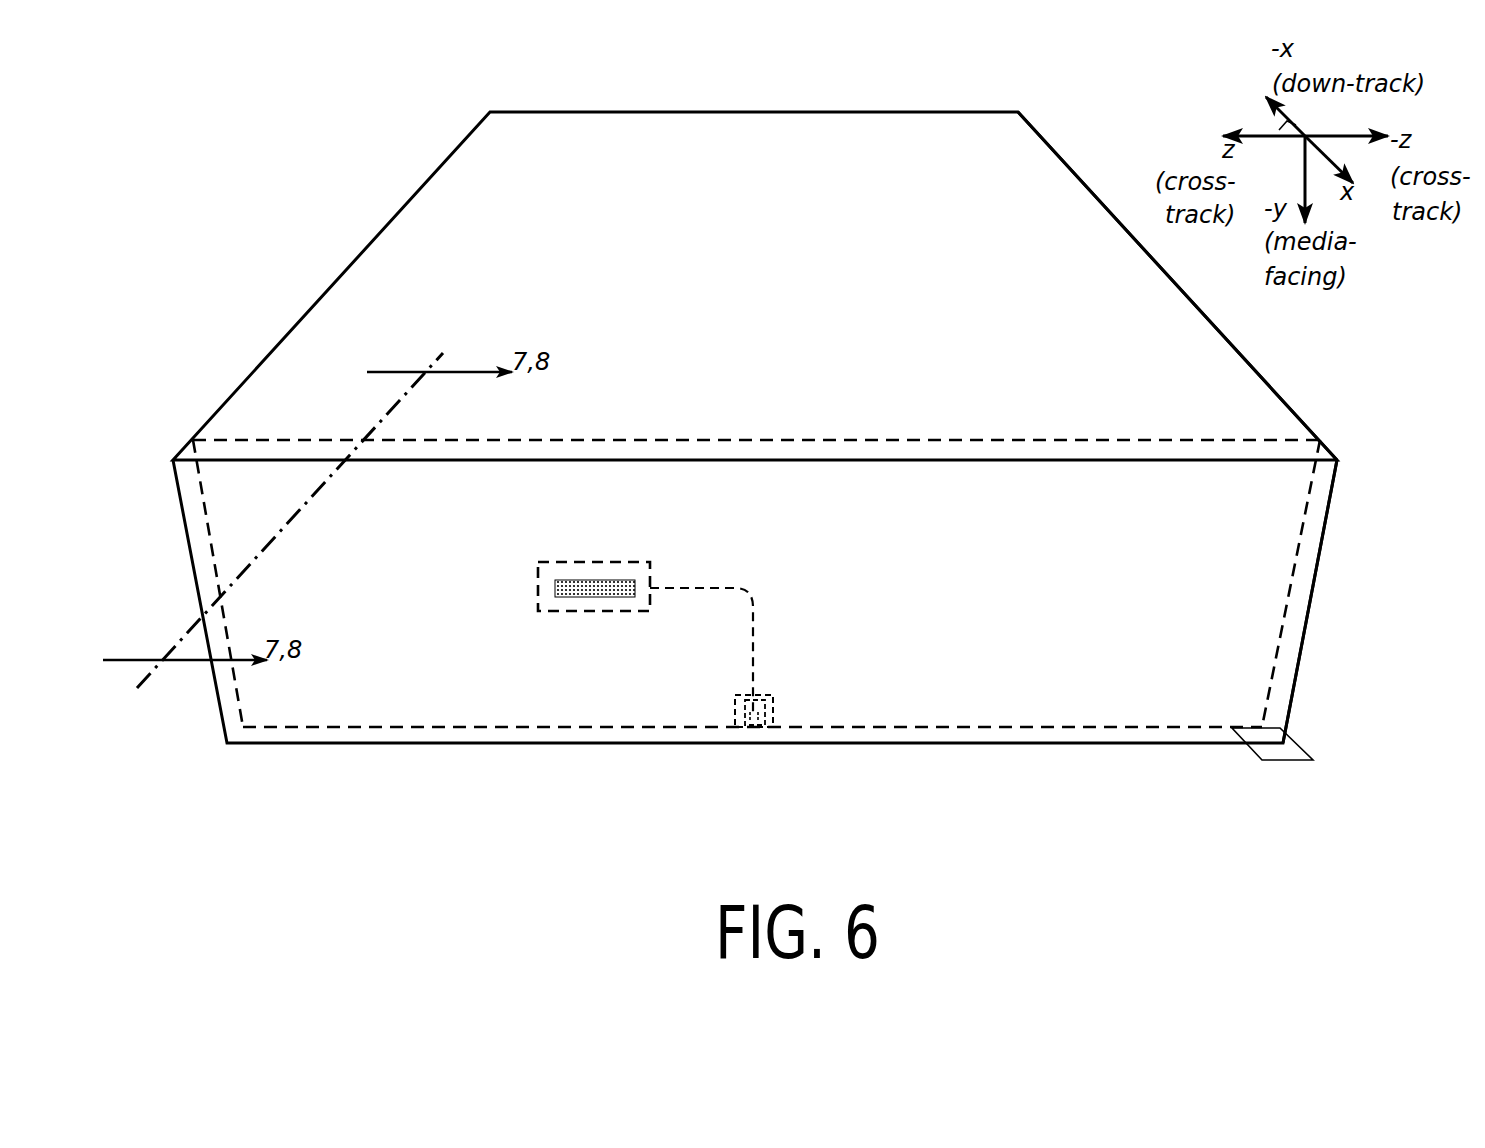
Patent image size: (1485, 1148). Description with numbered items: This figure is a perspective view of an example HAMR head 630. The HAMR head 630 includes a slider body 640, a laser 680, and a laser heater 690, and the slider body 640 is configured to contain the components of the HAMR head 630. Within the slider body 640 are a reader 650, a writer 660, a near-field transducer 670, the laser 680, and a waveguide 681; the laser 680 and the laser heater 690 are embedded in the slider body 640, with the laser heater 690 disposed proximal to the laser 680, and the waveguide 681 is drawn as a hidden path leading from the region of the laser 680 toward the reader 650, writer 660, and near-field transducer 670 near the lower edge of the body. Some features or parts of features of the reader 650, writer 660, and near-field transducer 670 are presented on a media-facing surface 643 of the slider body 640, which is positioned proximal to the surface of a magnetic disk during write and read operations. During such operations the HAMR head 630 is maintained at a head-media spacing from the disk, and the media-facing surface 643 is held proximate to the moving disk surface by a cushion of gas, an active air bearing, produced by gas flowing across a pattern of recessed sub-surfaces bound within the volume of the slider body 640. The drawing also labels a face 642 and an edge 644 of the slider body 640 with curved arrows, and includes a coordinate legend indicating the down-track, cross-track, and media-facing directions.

The HAMR head 630 is at (325, 193).
The slider body 640 is at (777, 302).
The trailing edge surface 642 is at (1210, 558).
The media-facing surface 643 is at (1290, 752).
The side edge of slider 644 is at (1170, 393).
The reader 650 is at (747, 707).
The writer 660 is at (768, 708).
The near-field transducer 670 is at (755, 718).
The laser 680 is at (640, 568).
The waveguide 681 is at (755, 617).
The laser heater 690 is at (598, 588).